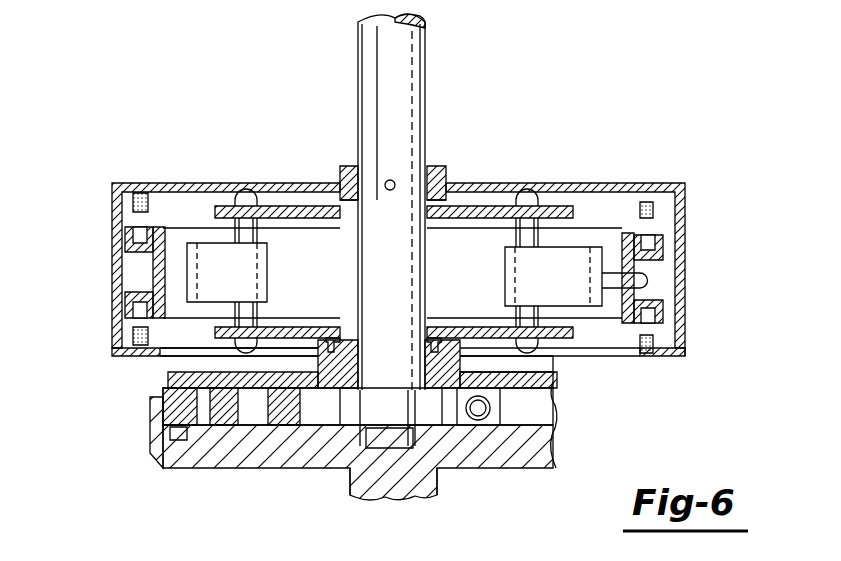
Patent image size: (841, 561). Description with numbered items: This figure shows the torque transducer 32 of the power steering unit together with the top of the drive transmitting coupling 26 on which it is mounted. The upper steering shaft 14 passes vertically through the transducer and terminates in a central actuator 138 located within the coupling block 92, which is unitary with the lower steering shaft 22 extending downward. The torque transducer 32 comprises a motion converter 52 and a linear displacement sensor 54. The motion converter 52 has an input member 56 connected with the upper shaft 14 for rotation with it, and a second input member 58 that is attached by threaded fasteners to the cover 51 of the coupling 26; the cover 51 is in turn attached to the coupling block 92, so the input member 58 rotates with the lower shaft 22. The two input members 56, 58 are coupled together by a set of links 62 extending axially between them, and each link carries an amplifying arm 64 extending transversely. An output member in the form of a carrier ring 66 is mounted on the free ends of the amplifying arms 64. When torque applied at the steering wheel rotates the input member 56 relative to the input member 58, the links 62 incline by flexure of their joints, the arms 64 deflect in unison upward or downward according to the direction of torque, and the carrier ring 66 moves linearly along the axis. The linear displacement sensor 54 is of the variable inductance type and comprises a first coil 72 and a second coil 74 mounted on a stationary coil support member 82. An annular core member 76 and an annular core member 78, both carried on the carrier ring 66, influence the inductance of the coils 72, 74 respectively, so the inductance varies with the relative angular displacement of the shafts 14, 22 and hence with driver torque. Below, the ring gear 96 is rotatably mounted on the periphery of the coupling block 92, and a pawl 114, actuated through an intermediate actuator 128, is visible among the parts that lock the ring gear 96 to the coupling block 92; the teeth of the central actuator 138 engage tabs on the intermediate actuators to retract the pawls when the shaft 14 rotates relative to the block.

The upper steering shaft 14 is at (420, 68).
The lower steering shaft 22 is at (436, 490).
The drive transmitting coupling 26 is at (297, 454).
The torque transducer 32 is at (517, 135).
The cover 51 is at (558, 377).
The motion converter 52 is at (585, 378).
The linear displacement sensor 54 is at (690, 158).
The input member 56 is at (492, 208).
The input member 58 is at (172, 370).
The links 62 is at (268, 278).
The amplifying arm 64 is at (168, 356).
The carrier ring 66 is at (148, 270).
The first coil 72 is at (655, 343).
The second coil 74 is at (653, 211).
The annular core member 76 is at (663, 312).
The annular core member 78 is at (663, 247).
The coil support member 82 is at (686, 354).
The coupling block 92 is at (238, 455).
The ring gear 96 is at (153, 425).
The pawl 114 is at (173, 450).
The intermediate actuator 128 is at (285, 425).
The central actuator 138 is at (358, 412).